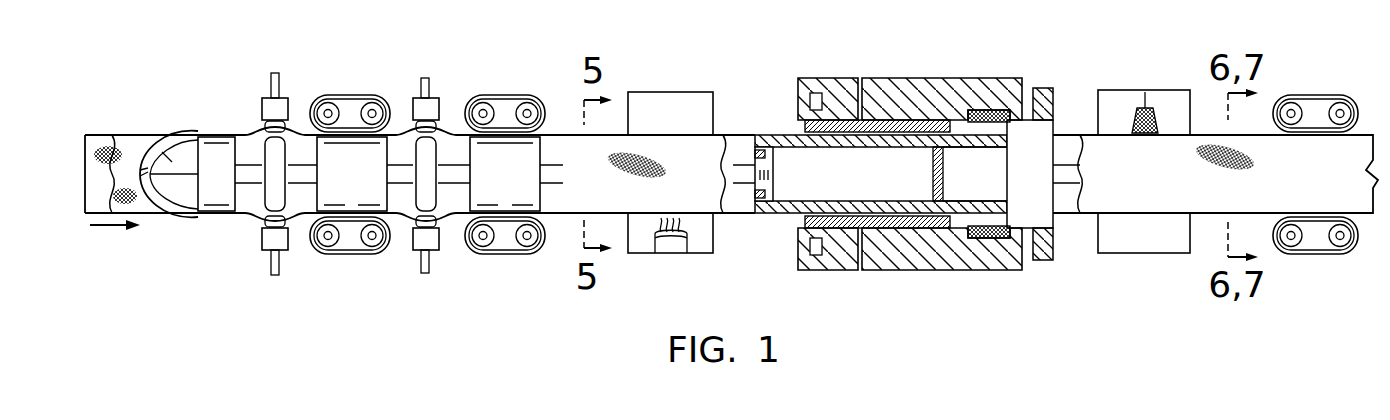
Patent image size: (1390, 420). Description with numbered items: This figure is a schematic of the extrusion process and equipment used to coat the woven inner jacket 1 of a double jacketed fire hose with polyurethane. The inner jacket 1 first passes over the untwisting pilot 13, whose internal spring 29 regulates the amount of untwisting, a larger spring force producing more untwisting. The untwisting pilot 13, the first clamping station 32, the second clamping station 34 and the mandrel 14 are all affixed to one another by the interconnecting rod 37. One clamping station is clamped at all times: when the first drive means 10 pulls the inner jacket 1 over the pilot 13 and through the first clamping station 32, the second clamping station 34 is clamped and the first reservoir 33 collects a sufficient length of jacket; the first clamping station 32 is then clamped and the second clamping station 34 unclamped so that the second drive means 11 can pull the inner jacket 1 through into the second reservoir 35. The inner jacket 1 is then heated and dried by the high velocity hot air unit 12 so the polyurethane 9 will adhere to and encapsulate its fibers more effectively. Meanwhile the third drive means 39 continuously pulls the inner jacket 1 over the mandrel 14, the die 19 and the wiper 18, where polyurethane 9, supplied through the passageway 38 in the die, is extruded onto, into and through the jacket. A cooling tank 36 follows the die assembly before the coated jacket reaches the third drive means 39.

The inner jacket 1 is at (106, 131).
The spring 29 is at (150, 133).
The untwisting pilot 13 is at (180, 214).
The second reservoir 35 is at (561, 214).
The interconnecting rod 37 is at (548, 168).
The first clamping station 32 is at (262, 108).
The first reservoir 33 is at (399, 214).
The second clamping station 34 is at (441, 107).
The first drive means 10 is at (356, 97).
The second drive means 11 is at (512, 97).
The high velocity hot air unit 12 is at (673, 92).
The mandrel 14 is at (797, 211).
The passageway 38 is at (861, 85).
The die 19 is at (898, 92).
The polyurethane 9 is at (918, 125).
The wiper 18 is at (988, 113).
The cooling station 36 is at (1153, 90).
The third drive means 39 is at (1313, 95).